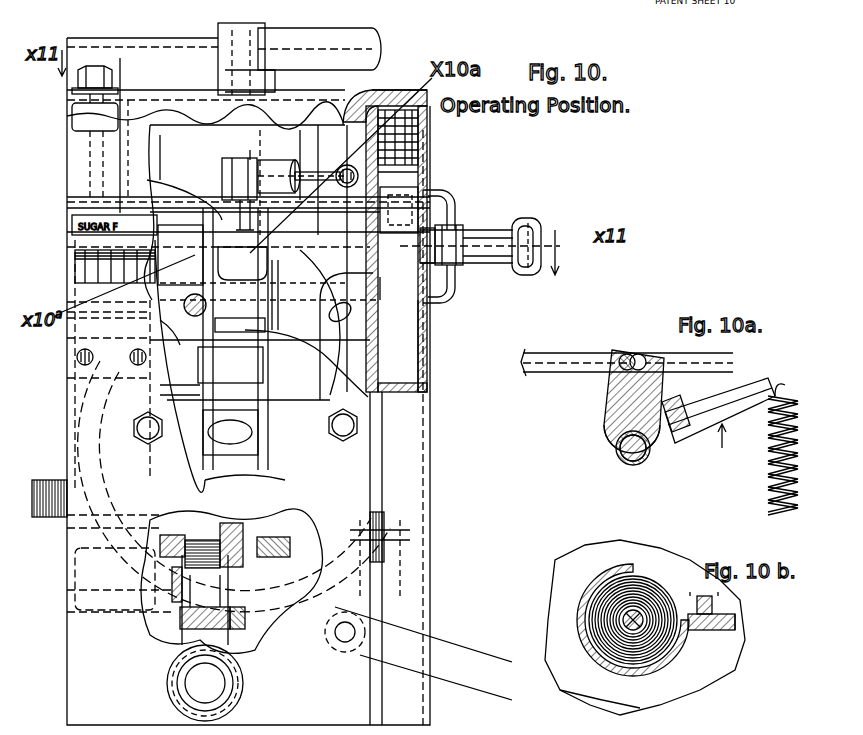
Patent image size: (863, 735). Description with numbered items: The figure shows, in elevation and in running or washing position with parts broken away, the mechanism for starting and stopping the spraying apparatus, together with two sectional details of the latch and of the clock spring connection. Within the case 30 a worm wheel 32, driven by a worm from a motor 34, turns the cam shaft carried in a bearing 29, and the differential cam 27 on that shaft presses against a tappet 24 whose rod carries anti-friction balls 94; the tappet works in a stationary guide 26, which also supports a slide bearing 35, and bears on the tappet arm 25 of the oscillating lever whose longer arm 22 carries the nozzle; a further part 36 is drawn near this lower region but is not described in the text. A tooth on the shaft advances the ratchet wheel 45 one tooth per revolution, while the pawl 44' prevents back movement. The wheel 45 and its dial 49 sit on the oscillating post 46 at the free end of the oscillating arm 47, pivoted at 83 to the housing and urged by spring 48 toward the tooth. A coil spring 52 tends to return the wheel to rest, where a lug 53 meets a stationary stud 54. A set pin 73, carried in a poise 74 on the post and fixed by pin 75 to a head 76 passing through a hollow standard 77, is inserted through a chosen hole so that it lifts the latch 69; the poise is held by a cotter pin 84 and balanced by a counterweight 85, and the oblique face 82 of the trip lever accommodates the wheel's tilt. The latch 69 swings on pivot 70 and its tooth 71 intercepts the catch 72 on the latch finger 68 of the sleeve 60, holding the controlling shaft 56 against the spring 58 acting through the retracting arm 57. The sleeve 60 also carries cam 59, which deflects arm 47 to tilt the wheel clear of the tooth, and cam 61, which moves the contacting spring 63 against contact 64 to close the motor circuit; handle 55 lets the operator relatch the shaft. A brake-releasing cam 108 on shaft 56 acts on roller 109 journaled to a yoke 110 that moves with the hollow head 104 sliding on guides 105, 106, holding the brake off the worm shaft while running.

In FIG. 10, the arm of oscillating lever 22 is at (440, 640).
In FIG. 10, the tappet 24 is at (190, 350).
In FIG. 10, the tappet arm 25 is at (158, 582).
In FIG. 10, the stationary guide 26 is at (200, 365).
In FIG. 10, the differential cam 27 is at (174, 157).
In FIG. 10, the bearing 29 is at (400, 320).
In FIG. 10, the case 30 is at (171, 683).
In FIG. 10B, the case 30 is at (600, 696).
In FIG. 10, the worm wheel 32 is at (313, 148).
In FIG. 10, the motor 34 is at (346, 336).
In FIG. 10, the slide bearing 35 is at (398, 563).
In FIG. 10, the bracket 36 is at (285, 548).
In FIG. 10, the pawl 44' is at (428, 137).
In FIG. 10, the ratchet wheel 45 is at (415, 172).
In FIG. 10B, the ratchet wheel 45 is at (665, 665).
In FIG. 10B, the oscillating post 46 is at (625, 626).
In FIG. 10, the oscillating arm 47 is at (382, 278).
In FIG. 10, the spring 48 is at (360, 240).
In FIG. 10, the dial 49 is at (428, 118).
In FIG. 10B, the coil spring 52 is at (640, 580).
In FIG. 10B, the lug 53 is at (735, 632).
In FIG. 10B, the stationary stud 54 is at (714, 606).
In FIG. 10, the handle 55 is at (299, 59).
In FIG. 10, the controlling shaft 56 is at (247, 143).
In FIG. 10A, the controlling shaft 56 is at (616, 448).
In FIG. 10, the retracting arm 57 is at (300, 158).
In FIG. 10A, the retracting arm 57 is at (718, 424).
In FIG. 10, the spring 58 is at (348, 165).
In FIG. 10A, the spring 58 is at (786, 402).
In FIG. 10, the cam 59 is at (171, 193).
In FIG. 10, the sleeve 60 is at (225, 170).
In FIG. 10A, the sleeve 60 is at (633, 476).
In FIG. 10, the cam 61 is at (268, 325).
In FIG. 10, the contacting spring 63 is at (178, 338).
In FIG. 10, the contact 64 is at (318, 345).
In FIG. 10, the latch finger 68 is at (272, 286).
In FIG. 10A, the latch finger 68 is at (608, 395).
In FIG. 10, the latch 69 is at (265, 212).
In FIG. 10A, the latch 69 is at (675, 366).
In FIG. 10, the pivot 70 is at (80, 252).
In FIG. 10, the tooth 71 is at (250, 212).
In FIG. 10A, the tooth 71 is at (640, 355).
In FIG. 10, the catch 72 is at (212, 242).
In FIG. 10A, the catch 72 is at (622, 354).
In FIG. 10, the set pin 73 is at (541, 245).
In FIG. 10, the poise 74 is at (455, 213).
In FIG. 10, the pin 75 is at (522, 222).
In FIG. 10, the head 76 is at (541, 228).
In FIG. 10, the hollow standard 77 is at (478, 263).
In FIG. 10, the face of trip lever 82 is at (436, 201).
In FIG. 10, the pivot 83 is at (97, 145).
In FIG. 10, the cotter pin 84 is at (463, 232).
In FIG. 10, the counterweight 85 is at (445, 297).
In FIG. 10, the anti-friction balls 94 is at (192, 296).
In FIG. 10, the hollow head 104 is at (231, 466).
In FIG. 10, the guide 105 is at (343, 440).
In FIG. 10, the guide 106 is at (142, 434).
In FIG. 10, the brake-releasing cam 108 is at (216, 292).
In FIG. 10, the anti-friction roller 109 is at (222, 425).
In FIG. 10, the yoke 110 is at (225, 385).